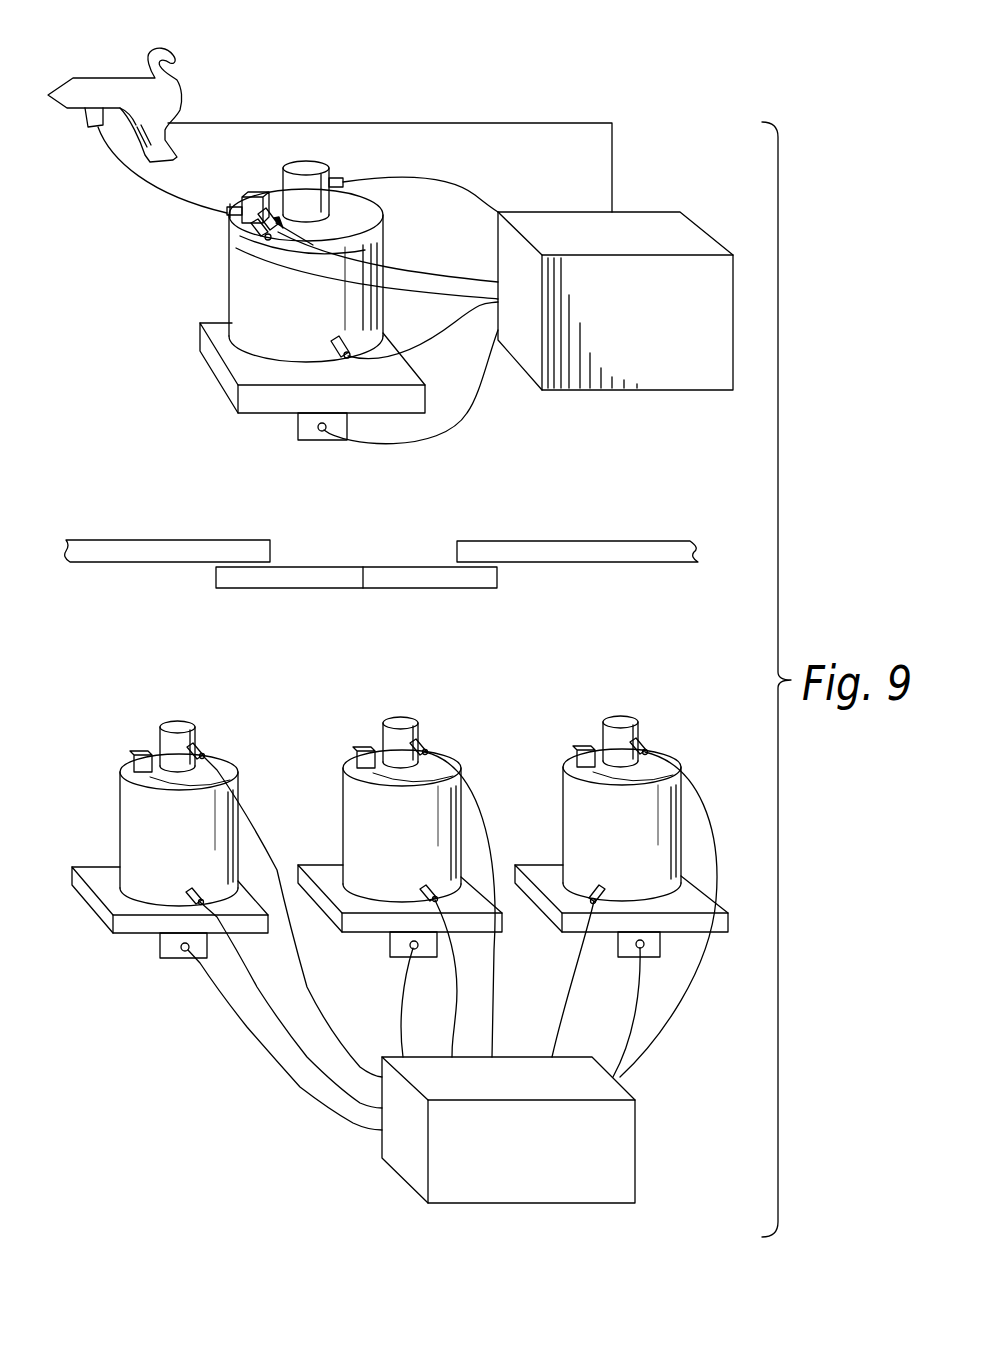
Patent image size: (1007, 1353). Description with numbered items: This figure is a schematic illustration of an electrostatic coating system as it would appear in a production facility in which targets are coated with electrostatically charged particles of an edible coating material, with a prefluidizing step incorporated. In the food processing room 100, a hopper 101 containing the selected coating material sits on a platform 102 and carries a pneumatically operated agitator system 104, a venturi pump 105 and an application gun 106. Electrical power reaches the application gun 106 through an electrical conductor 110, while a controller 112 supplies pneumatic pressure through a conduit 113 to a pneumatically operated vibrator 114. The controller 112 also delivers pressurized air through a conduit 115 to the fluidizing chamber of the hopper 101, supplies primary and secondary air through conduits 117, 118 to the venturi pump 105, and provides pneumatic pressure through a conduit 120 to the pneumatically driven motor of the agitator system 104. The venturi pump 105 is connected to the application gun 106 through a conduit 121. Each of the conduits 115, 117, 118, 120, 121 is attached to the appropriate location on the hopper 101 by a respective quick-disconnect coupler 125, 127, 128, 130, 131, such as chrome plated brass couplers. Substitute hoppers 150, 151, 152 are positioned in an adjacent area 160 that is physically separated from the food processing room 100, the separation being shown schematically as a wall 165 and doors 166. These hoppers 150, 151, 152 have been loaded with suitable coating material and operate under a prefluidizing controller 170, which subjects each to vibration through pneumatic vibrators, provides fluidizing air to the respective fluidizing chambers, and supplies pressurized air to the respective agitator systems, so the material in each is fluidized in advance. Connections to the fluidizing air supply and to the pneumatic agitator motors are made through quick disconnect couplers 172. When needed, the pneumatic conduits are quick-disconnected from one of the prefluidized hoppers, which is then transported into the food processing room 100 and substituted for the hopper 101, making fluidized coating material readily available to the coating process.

The food processing room 100 is at (734, 162).
The hopper 101 is at (245, 297).
The platform 102 is at (218, 369).
The pneumatically operated agitator system 104 is at (300, 166).
The venturi pump 105 is at (258, 196).
The application gun 106 is at (86, 76).
The electrical conductor 110 is at (490, 123).
The controller 112 is at (700, 246).
The conduit 113 is at (463, 415).
The pneumatically operated vibrator 114 is at (291, 420).
The conduit 115 is at (478, 325).
The conduit 117 is at (472, 265).
The conduit 118 is at (416, 278).
The conduit 120 is at (480, 188).
The conduit 121 is at (130, 181).
The quick-disconnect coupler 125 is at (352, 348).
The quick-disconnect coupler 127 is at (255, 233).
The quick-disconnect coupler 128 is at (386, 214).
The quick-disconnect coupler 130 is at (343, 182).
The quick-disconnect coupler 131 is at (236, 217).
The substitute hopper 150 is at (120, 813).
The substitute hopper 151 is at (362, 817).
The substitute hopper 152 is at (577, 822).
The adjacent area 160 is at (732, 702).
The wall 165 is at (626, 541).
The doors 166 is at (390, 587).
The prefluidizing controller 170 is at (615, 1166).
The quick disconnect couplers 172 is at (205, 753).